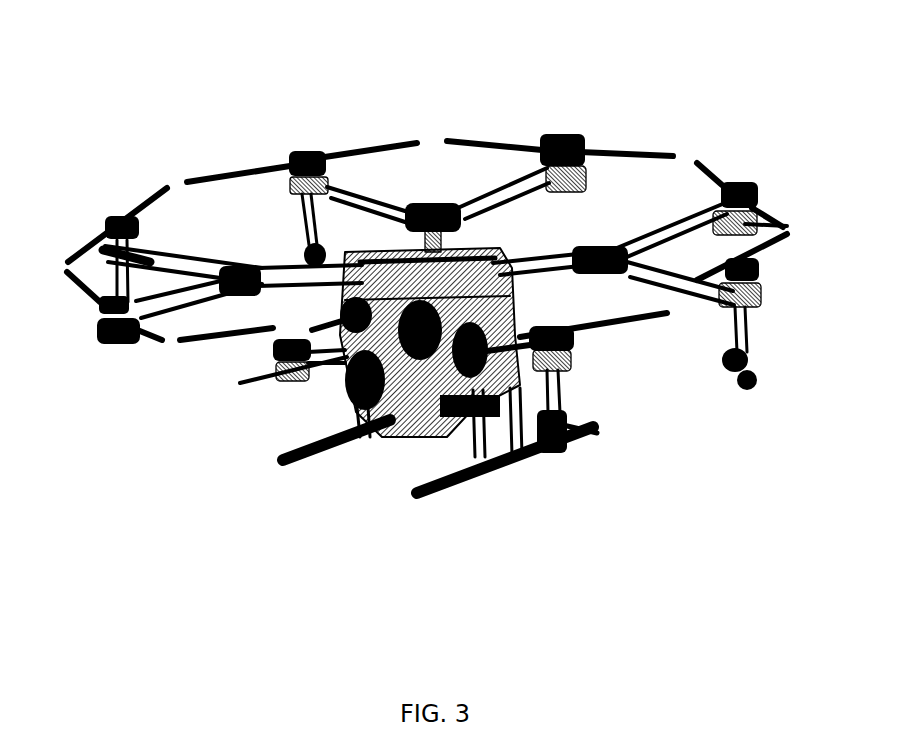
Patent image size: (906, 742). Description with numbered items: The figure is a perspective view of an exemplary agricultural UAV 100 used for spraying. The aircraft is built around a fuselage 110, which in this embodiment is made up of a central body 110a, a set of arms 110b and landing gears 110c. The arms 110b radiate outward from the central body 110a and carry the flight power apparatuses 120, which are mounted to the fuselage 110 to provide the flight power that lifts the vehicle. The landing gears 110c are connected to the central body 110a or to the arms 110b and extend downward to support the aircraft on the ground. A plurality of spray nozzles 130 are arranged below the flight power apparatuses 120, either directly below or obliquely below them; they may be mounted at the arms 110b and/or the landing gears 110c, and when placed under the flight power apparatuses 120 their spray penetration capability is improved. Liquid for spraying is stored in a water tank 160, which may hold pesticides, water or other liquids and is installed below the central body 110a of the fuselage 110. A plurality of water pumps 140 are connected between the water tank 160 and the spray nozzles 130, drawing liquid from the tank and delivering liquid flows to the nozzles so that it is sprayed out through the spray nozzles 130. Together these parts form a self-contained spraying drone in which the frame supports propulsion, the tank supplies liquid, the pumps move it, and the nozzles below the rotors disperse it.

The agricultural UAV 100 is at (448, 88).
The fuselage 110 is at (520, 577).
The central body 110a is at (408, 272).
The arms 110b is at (345, 355).
The landing gears 110c is at (507, 462).
The flight power apparatuses 120 is at (560, 144).
The spray nozzles 130 is at (747, 340).
The water pumps 140 is at (343, 316).
The water tank 160 is at (508, 377).